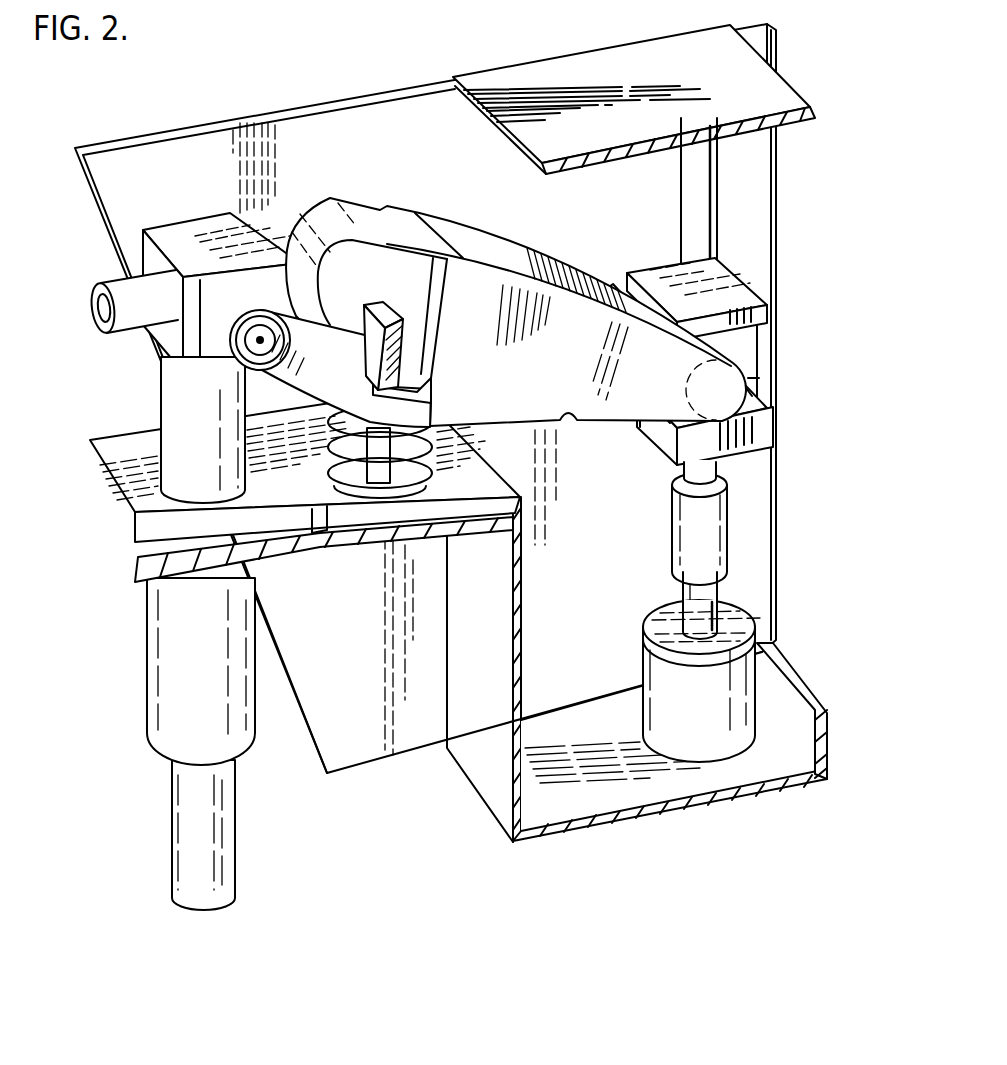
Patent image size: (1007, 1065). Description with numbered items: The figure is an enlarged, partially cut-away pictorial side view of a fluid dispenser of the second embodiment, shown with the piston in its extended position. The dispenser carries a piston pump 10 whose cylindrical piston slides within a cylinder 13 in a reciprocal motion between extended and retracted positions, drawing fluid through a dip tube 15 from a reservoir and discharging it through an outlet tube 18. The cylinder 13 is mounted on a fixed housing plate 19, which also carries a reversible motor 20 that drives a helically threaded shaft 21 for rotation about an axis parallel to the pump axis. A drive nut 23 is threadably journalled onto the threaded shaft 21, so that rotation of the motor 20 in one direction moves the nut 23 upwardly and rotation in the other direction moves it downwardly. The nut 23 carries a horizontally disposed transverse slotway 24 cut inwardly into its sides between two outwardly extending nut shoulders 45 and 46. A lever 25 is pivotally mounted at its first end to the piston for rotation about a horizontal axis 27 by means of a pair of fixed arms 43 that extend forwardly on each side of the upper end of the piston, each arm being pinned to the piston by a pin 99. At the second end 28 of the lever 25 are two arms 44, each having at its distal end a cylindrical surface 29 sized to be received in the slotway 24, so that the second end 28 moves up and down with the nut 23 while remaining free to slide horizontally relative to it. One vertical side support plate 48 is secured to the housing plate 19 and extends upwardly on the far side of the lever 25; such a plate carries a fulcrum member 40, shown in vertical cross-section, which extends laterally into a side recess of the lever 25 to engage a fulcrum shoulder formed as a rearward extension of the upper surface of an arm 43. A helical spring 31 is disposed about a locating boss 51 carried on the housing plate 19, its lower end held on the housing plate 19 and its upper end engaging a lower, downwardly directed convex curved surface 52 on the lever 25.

The piston pump 10 is at (180, 237).
The cylinder 13 is at (218, 660).
The dip tube 15 is at (180, 800).
The outlet tube 18 is at (110, 278).
The housing plate 19 is at (582, 174).
The reversible motor 20 is at (648, 660).
The helically threaded shaft 21 is at (682, 172).
The drive nut 23 is at (644, 458).
The transverse slotway 24 is at (754, 343).
The lever 25 is at (508, 257).
The horizontal axis 27 is at (240, 372).
The second end 28 is at (763, 392).
The cylindrical surfaces 29 is at (770, 380).
The spring 31 is at (423, 477).
The fulcrum member 40 is at (403, 293).
The fixed arms 43 is at (342, 302).
The arms 44 is at (670, 390).
The nut shoulder 45 is at (773, 310).
The nut shoulder 46 is at (773, 440).
The vertical side support plate 48 is at (312, 104).
The locating boss 51 is at (416, 432).
The curved surface 52 is at (408, 443).
The pin 99 is at (330, 363).